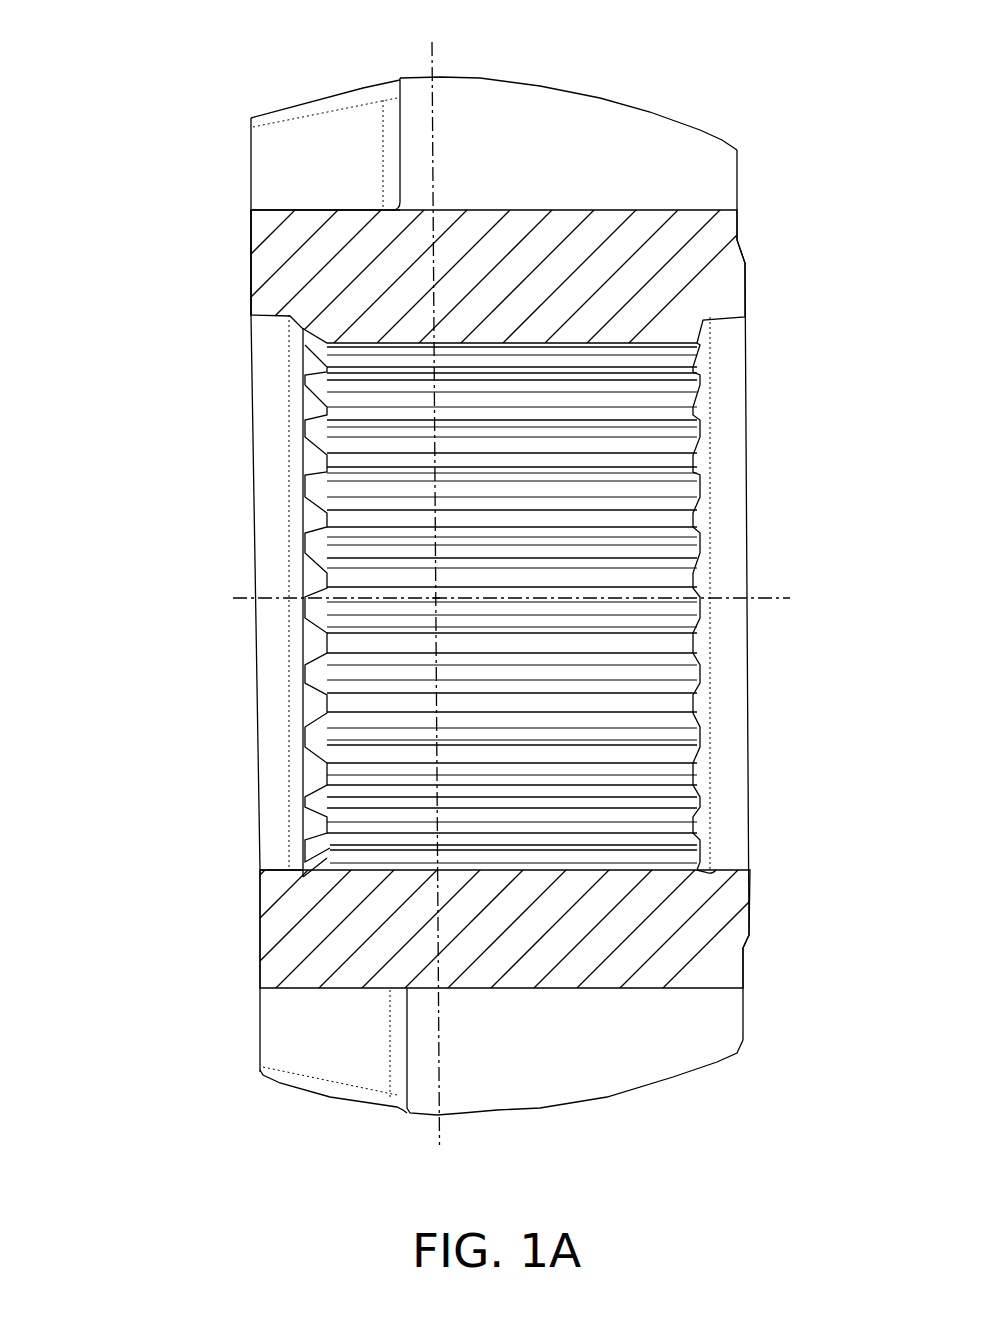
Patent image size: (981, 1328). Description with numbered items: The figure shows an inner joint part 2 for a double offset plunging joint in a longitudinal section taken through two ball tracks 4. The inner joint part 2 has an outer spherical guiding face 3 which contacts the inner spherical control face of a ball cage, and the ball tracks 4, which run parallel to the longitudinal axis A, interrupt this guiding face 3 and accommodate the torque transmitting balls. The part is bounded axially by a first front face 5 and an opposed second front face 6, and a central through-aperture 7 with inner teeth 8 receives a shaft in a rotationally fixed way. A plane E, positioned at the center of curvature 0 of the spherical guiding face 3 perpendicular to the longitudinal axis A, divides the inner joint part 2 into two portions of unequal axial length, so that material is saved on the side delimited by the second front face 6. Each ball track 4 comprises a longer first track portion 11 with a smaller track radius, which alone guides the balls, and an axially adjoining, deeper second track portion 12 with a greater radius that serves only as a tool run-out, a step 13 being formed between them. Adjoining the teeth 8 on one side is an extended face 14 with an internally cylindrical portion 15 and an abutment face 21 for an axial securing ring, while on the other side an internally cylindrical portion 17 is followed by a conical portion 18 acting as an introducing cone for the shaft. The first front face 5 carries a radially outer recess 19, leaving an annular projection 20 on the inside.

The inner joint part 2 is at (110, 88).
The outer spherical guiding face 3 is at (530, 80).
The ball tracks 4 is at (583, 117).
The first front face 5 is at (745, 263).
The second front face 6 is at (251, 273).
The central through-aperture 7 is at (607, 345).
The inner teeth 8 is at (657, 449).
The first track portion 11 is at (665, 208).
The second track portion 12 is at (302, 210).
The step 13 is at (397, 133).
The extended face 14 is at (703, 326).
The internally cylindrical portion 15 is at (737, 878).
The internally cylindrical portion 17 is at (275, 877).
The conical portion 18 is at (317, 765).
The recess 19 is at (743, 996).
The annular projection 20 is at (750, 911).
The abutment face 21 is at (703, 809).
The longitudinal axis A is at (778, 598).
The plane E is at (433, 98).
The center of curvature 0 is at (435, 599).